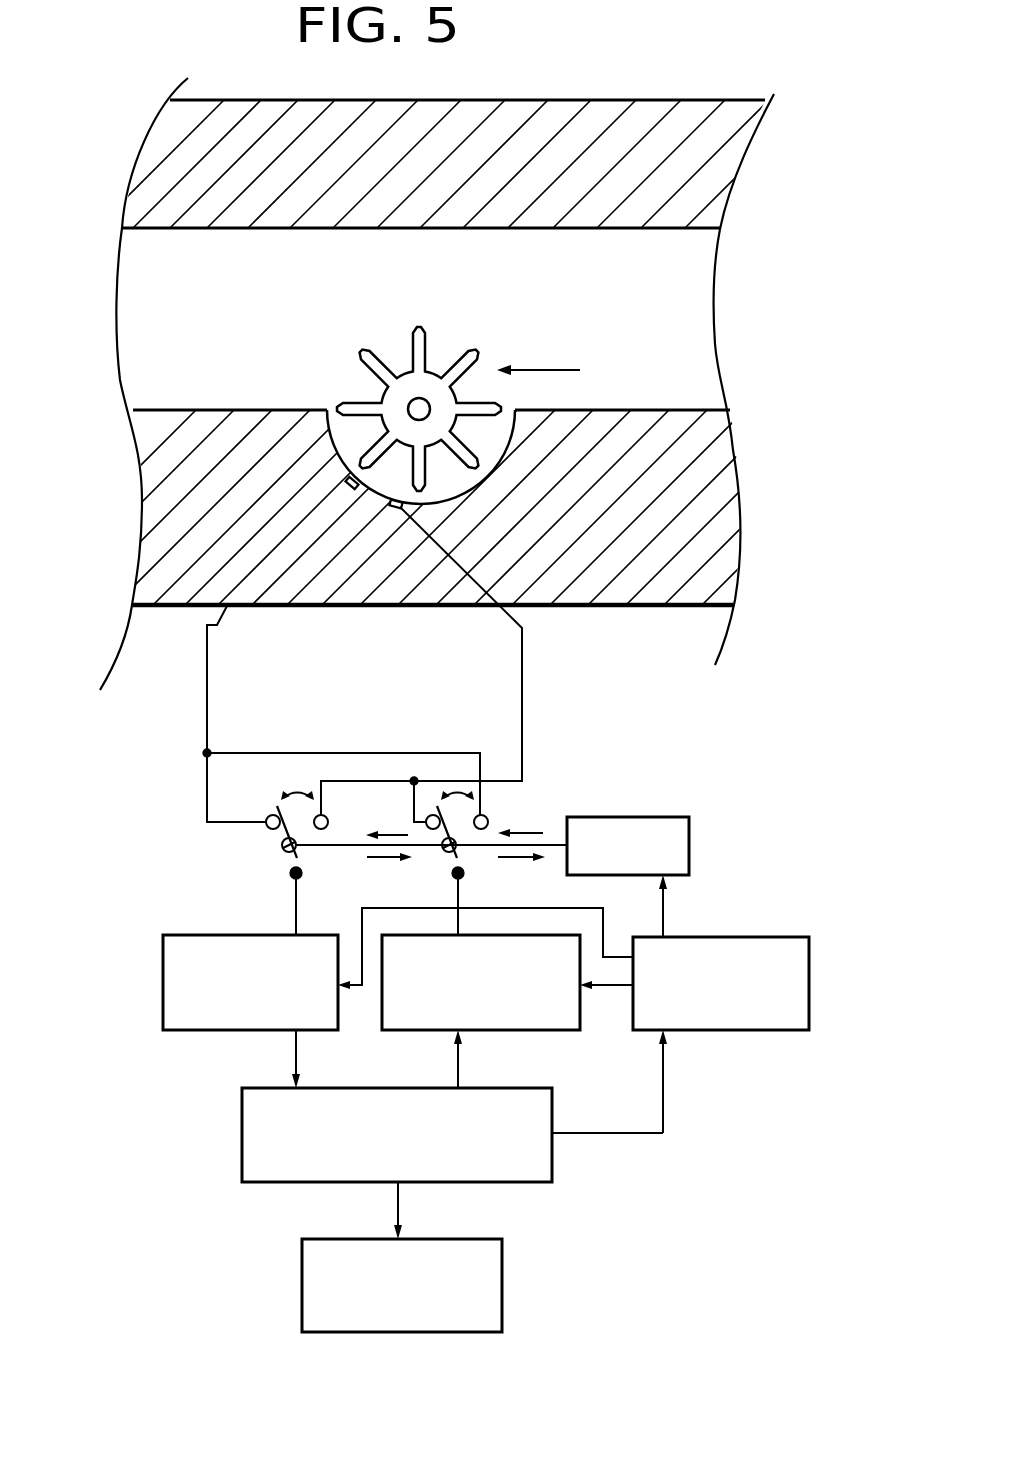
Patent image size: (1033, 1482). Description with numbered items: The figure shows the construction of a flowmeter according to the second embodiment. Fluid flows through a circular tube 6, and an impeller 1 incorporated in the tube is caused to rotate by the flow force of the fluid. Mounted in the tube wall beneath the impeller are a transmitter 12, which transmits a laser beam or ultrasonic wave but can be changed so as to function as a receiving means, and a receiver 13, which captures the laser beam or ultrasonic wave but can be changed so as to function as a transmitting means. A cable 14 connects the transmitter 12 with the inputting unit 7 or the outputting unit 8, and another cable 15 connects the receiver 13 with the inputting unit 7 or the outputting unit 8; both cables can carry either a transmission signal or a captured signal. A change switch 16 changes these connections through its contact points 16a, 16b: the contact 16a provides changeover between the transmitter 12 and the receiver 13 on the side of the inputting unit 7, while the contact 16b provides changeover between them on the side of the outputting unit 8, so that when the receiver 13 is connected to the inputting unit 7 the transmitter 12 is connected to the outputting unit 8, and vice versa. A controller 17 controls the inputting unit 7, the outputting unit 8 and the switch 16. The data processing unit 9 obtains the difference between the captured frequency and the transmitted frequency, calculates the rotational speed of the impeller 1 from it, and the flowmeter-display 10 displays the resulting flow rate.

The impeller 1 is at (427, 346).
The circular tube 6 is at (735, 473).
The inputting unit 7 is at (163, 985).
The outputting unit 8 is at (560, 1032).
The data processing unit 9 is at (553, 1160).
The flowmeter-display 10 is at (502, 1305).
The transmitter 12 is at (396, 506).
The receiver 13 is at (350, 487).
The cable 14 is at (522, 655).
The cable 15 is at (207, 656).
The change switch 16 is at (640, 817).
The contact point 16a is at (270, 856).
The contact point 16b is at (476, 860).
The controller 17 is at (725, 1032).